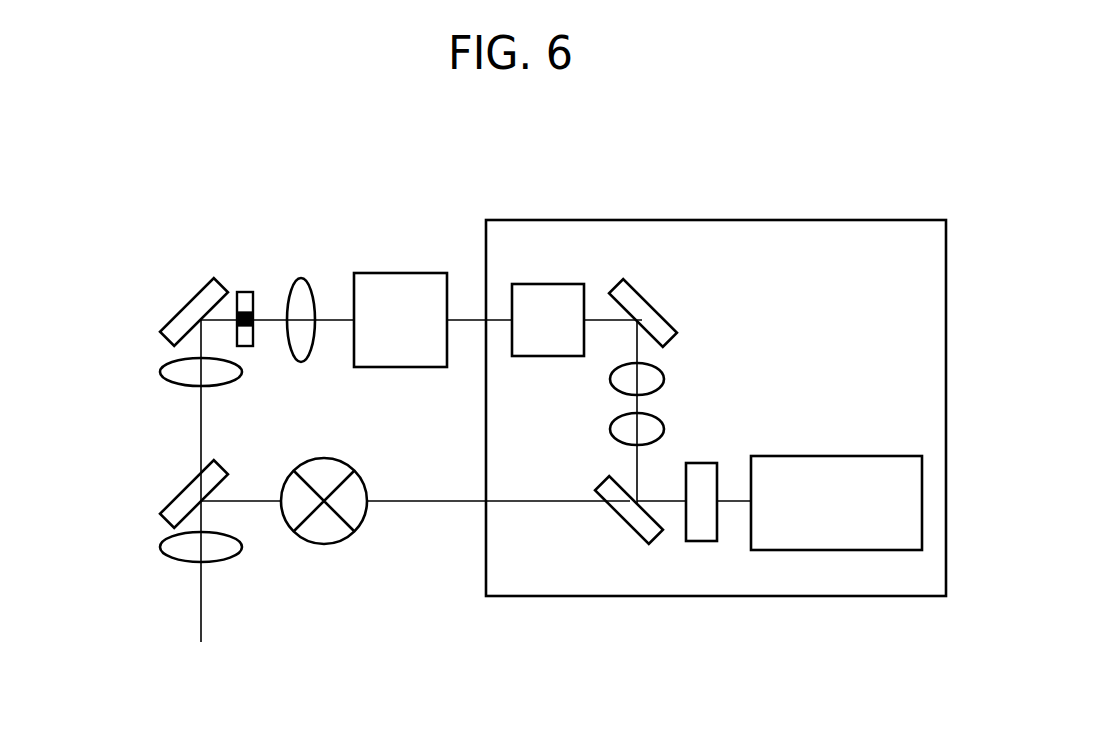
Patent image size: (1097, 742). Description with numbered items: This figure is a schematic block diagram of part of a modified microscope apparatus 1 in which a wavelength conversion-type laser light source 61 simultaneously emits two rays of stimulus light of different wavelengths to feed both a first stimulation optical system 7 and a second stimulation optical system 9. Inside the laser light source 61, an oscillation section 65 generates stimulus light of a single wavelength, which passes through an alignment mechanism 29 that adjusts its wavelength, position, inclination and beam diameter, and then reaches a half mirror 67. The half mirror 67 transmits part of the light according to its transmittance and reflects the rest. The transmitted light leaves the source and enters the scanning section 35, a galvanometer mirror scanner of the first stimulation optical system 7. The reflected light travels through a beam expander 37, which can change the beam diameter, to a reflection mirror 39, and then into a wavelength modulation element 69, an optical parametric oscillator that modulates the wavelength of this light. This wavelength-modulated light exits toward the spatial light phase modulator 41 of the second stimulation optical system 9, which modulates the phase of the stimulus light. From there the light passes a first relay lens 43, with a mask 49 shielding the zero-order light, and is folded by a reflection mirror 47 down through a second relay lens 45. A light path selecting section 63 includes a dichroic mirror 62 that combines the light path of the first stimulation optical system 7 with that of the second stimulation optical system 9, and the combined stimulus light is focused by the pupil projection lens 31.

The microscope apparatus 1 is at (886, 167).
The first stimulation optical system 7 is at (402, 460).
The second stimulation optical system 9 is at (452, 229).
The alignment mechanism 29 is at (699, 543).
The pupil projection lens 31 is at (158, 544).
The scanning section 35 is at (323, 546).
The beam expander 37 is at (666, 362).
The reflection mirror 39 is at (664, 310).
The spatial light phase modulator 41 is at (400, 272).
The first relay lens 43 is at (297, 278).
The second relay lens 45 is at (160, 372).
The reflection mirror 47 is at (198, 290).
The mask 49 is at (244, 291).
The wavelength conversion-type laser light source 61 is at (813, 598).
The dichroic mirror 62 is at (173, 497).
The light path selecting section 63 is at (143, 468).
The oscillation section 65 is at (843, 455).
The half mirror 67 is at (613, 509).
The wavelength modulation element 69 is at (542, 358).